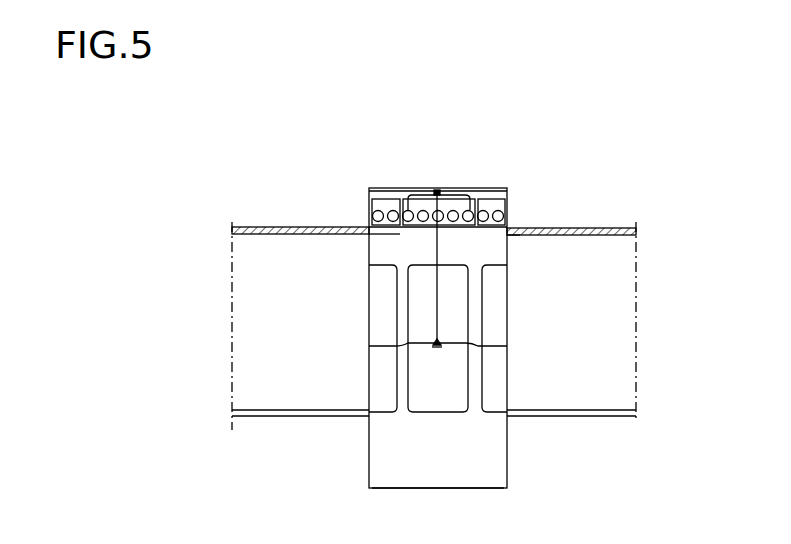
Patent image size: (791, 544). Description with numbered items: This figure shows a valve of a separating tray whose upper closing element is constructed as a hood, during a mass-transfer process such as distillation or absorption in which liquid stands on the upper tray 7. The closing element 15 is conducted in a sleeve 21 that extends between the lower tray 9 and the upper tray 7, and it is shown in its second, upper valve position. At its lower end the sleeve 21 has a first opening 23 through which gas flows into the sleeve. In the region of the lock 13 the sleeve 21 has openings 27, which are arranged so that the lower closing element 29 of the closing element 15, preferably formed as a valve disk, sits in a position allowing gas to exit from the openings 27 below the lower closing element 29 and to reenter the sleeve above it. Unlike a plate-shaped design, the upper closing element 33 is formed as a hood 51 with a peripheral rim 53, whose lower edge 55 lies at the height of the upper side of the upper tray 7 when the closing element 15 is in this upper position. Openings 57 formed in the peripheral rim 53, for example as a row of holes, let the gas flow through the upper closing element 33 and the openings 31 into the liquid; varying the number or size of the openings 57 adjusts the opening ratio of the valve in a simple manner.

The upper tray 7 is at (590, 231).
The lower tray 9 is at (607, 409).
The lock 13 is at (252, 327).
The closing element 15 is at (437, 297).
The sleeve 21 is at (508, 452).
The first opening 23 is at (433, 488).
The openings 27 is at (500, 337).
The lower closing element 29 is at (370, 366).
The openings 31 is at (383, 197).
The upper closing element 33 is at (453, 203).
The hood 51 is at (507, 203).
The peripheral rim 53 is at (369, 203).
The lower edge 55 is at (398, 229).
The openings 57 is at (497, 228).